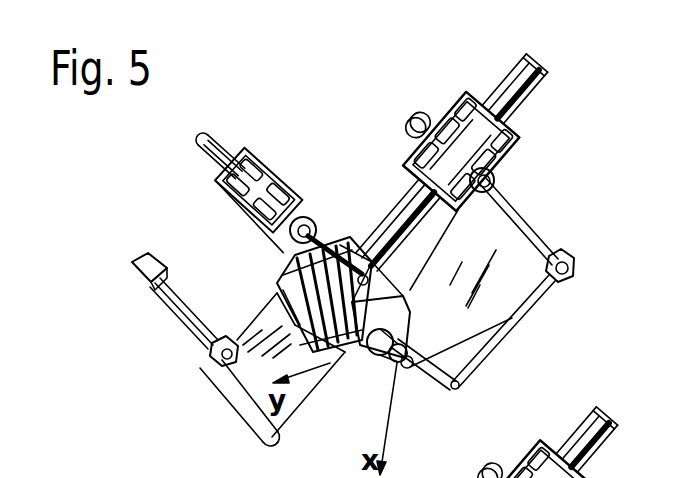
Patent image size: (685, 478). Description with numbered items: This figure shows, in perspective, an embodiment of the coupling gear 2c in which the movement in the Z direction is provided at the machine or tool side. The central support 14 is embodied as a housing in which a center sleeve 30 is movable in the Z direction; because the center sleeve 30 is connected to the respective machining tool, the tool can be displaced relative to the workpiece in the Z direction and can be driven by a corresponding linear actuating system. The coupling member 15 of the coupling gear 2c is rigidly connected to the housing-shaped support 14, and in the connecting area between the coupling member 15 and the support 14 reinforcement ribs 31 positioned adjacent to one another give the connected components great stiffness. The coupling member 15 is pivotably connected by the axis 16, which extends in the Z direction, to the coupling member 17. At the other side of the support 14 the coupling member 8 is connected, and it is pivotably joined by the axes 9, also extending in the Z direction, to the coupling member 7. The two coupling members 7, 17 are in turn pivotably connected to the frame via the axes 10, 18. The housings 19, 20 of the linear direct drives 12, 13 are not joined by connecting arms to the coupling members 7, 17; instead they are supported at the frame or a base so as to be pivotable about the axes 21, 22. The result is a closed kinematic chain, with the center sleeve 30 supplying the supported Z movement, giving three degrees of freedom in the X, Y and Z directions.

The coupling gear 2c is at (587, 50).
The coupling member 7 is at (508, 245).
The coupling member 8 is at (437, 363).
The axes 9 is at (461, 392).
The axis 10 is at (574, 265).
The linear direct drive 12 is at (231, 118).
The linear direct drive 13 is at (548, 96).
The support 14 is at (296, 282).
The coupling member 15 is at (267, 330).
The axis 16 is at (274, 443).
The coupling member 17 is at (200, 343).
The axis 18 is at (213, 353).
The housing 19 is at (268, 190).
The housing 20 is at (470, 124).
The axis 21 is at (305, 218).
The axis 22 is at (494, 174).
The center sleeve 30 is at (325, 345).
The reinforcement ribs 31 is at (298, 272).